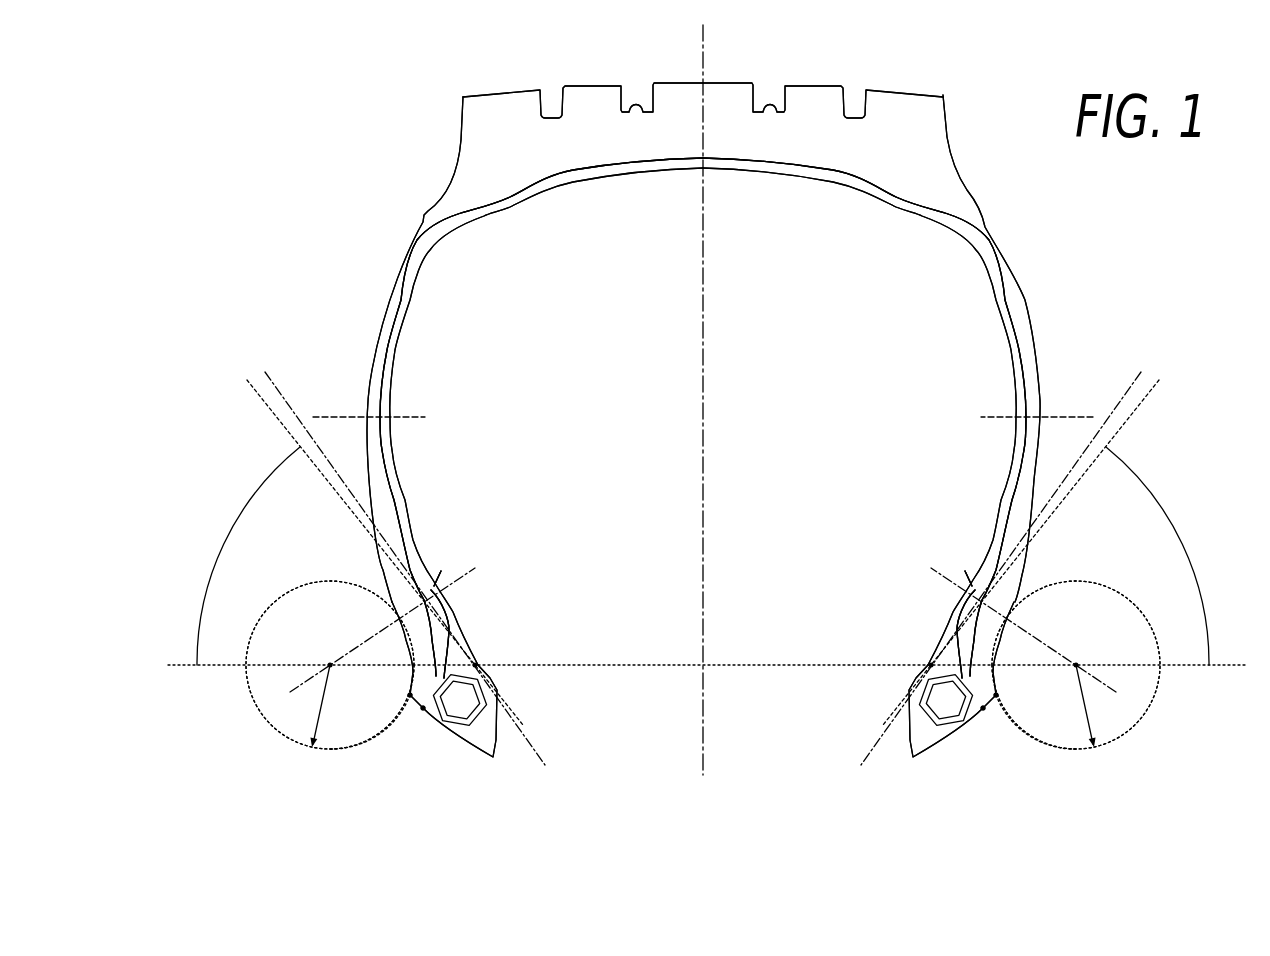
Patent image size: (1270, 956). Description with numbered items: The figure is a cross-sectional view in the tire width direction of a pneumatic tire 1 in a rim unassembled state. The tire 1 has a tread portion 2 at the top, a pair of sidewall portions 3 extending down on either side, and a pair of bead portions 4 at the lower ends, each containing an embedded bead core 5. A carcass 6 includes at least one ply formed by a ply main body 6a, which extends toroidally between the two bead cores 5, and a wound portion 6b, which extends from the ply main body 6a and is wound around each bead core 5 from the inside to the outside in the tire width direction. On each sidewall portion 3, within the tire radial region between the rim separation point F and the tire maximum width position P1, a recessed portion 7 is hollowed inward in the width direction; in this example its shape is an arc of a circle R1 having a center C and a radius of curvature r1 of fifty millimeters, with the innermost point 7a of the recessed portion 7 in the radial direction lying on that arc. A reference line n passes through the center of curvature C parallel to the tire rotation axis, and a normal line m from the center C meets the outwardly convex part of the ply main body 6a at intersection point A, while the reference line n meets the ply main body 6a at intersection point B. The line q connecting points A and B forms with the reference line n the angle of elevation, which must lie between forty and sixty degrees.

The pneumatic tire 1 is at (688, 410).
The tread portion 2 is at (703, 74).
The sidewall portion 3 is at (704, 348).
The bead portion 4 is at (703, 679).
The bead core 5 is at (702, 700).
The carcass 6 is at (703, 418).
The ply main body 6a is at (703, 417).
The wound portion 6b is at (703, 564).
The recessed portion 7 is at (703, 627).
The innermost point 7a is at (703, 749).
The intersection point A is at (703, 612).
The intersection point B is at (703, 678).
The center of curvature C is at (703, 630).
The rim separation point F is at (703, 751).
The tire maximum width position P1 is at (701, 385).
The line q is at (703, 559).
The normal line m is at (703, 578).
The reference line n is at (699, 664).
The radius of curvature r1 is at (710, 706).
The circle R1 is at (703, 706).